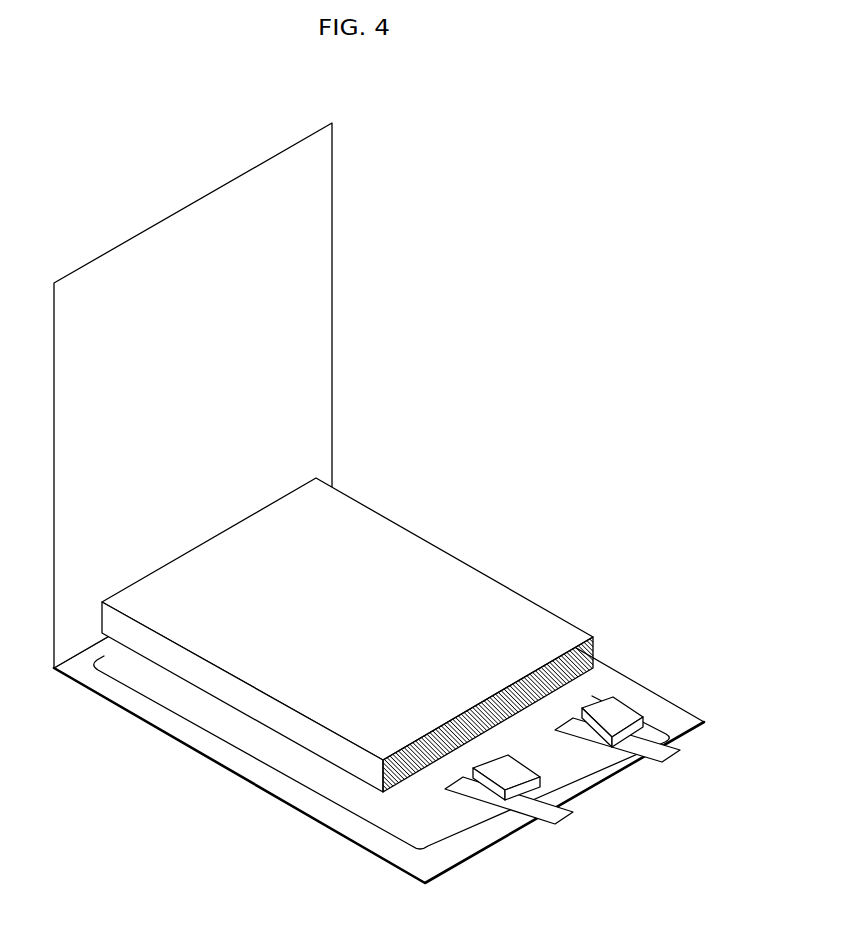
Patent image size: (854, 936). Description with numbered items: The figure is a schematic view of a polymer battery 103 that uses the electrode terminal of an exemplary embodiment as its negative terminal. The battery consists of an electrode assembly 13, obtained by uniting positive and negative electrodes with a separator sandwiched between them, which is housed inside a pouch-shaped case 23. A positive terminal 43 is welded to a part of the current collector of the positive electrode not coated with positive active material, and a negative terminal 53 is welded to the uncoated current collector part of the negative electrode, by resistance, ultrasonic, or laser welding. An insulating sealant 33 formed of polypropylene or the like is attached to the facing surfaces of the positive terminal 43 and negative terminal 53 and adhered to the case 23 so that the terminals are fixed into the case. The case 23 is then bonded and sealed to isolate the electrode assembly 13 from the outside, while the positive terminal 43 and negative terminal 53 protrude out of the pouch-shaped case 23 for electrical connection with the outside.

The polymer battery 103 is at (392, 487).
The pouch-shaped case 23 is at (322, 254).
The electrode assembly 13 is at (427, 565).
The insulating sealant 33 is at (497, 775).
The positive terminal 43 is at (563, 815).
The negative terminal 53 is at (672, 752).